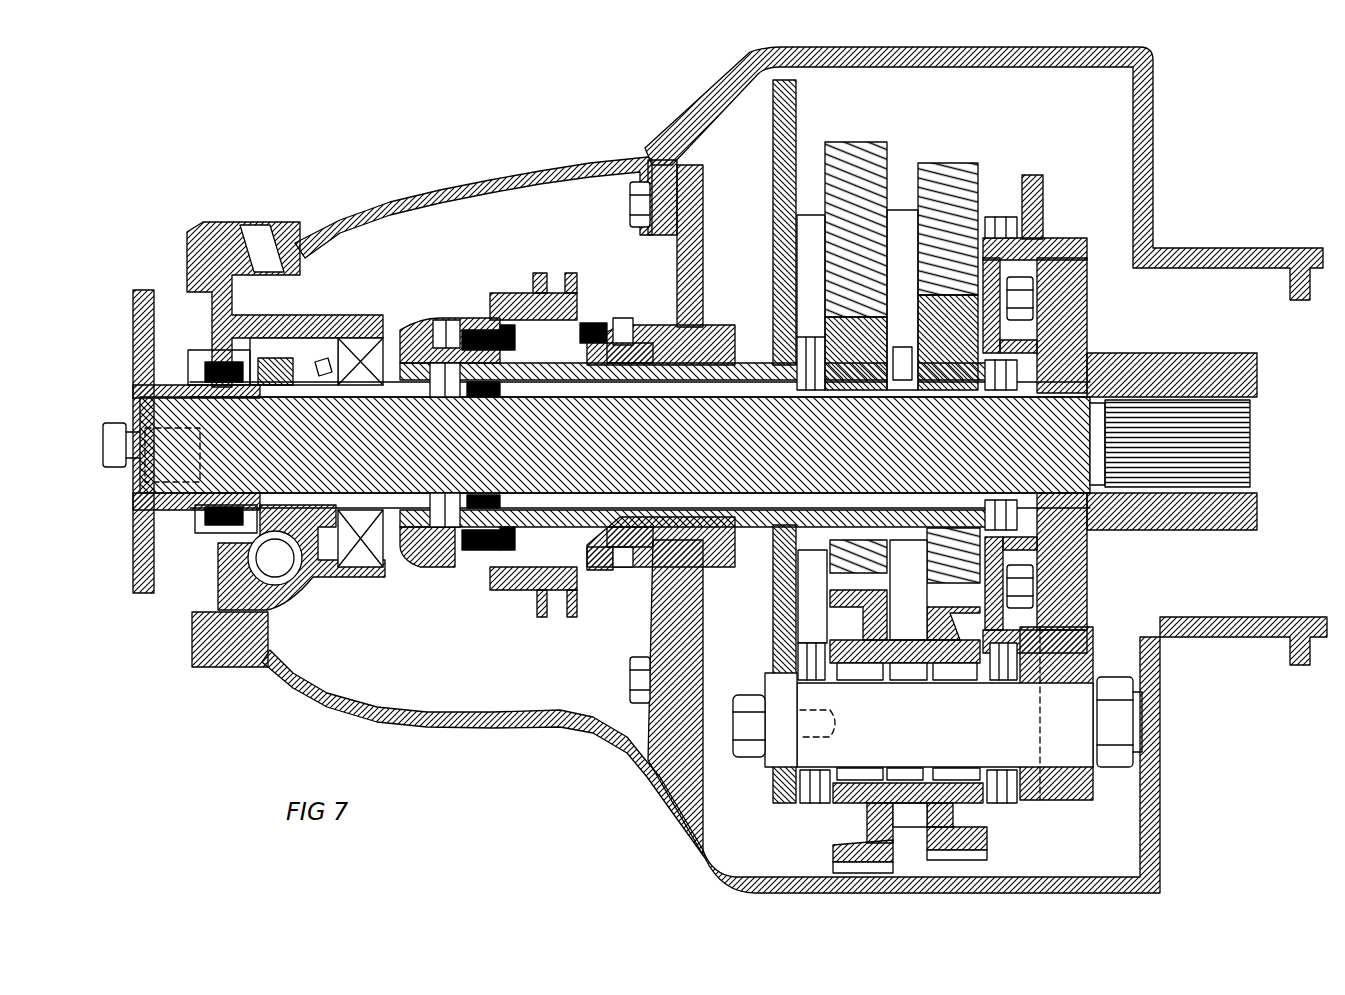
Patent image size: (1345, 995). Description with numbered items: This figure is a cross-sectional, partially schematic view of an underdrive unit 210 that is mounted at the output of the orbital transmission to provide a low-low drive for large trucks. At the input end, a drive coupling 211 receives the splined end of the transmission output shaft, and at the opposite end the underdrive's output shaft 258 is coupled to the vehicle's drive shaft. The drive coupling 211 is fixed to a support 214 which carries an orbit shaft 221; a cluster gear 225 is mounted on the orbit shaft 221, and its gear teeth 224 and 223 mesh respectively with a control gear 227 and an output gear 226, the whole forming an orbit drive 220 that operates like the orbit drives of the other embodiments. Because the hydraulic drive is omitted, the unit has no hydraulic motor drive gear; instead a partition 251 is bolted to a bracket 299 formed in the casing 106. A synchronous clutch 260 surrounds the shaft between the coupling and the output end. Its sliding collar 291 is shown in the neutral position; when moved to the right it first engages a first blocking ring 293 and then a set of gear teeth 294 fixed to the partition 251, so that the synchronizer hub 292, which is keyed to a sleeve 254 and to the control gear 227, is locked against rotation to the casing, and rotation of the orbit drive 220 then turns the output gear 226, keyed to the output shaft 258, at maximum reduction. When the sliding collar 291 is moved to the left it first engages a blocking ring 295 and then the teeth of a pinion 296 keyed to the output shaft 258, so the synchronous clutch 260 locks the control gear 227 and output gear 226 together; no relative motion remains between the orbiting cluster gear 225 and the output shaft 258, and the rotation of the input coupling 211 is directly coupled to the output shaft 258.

The casing 106 is at (1153, 140).
The underdrive unit 210 is at (497, 146).
The input drive coupling 211 is at (1160, 353).
The support 214 is at (765, 120).
The orbit drive 220 is at (974, 473).
The orbit shaft 221 is at (987, 723).
The gear teeth 223 is at (937, 163).
The gear teeth 224 is at (873, 143).
The cluster gear 225 is at (903, 210).
The output gear 226 is at (955, 548).
The control gear 227 is at (847, 553).
The partition 251 is at (743, 262).
The sleeve 254 is at (630, 575).
The output shaft 258 is at (133, 473).
The synchronous clutch 260 is at (485, 430).
The sliding collar 291 is at (533, 290).
The synchronizer hub 292 is at (497, 573).
The first blocking ring 293 is at (603, 573).
The gear teeth 294 is at (627, 312).
The blocking ring 295 is at (450, 313).
The pinion 296 is at (427, 543).
The bracket 299 is at (668, 160).